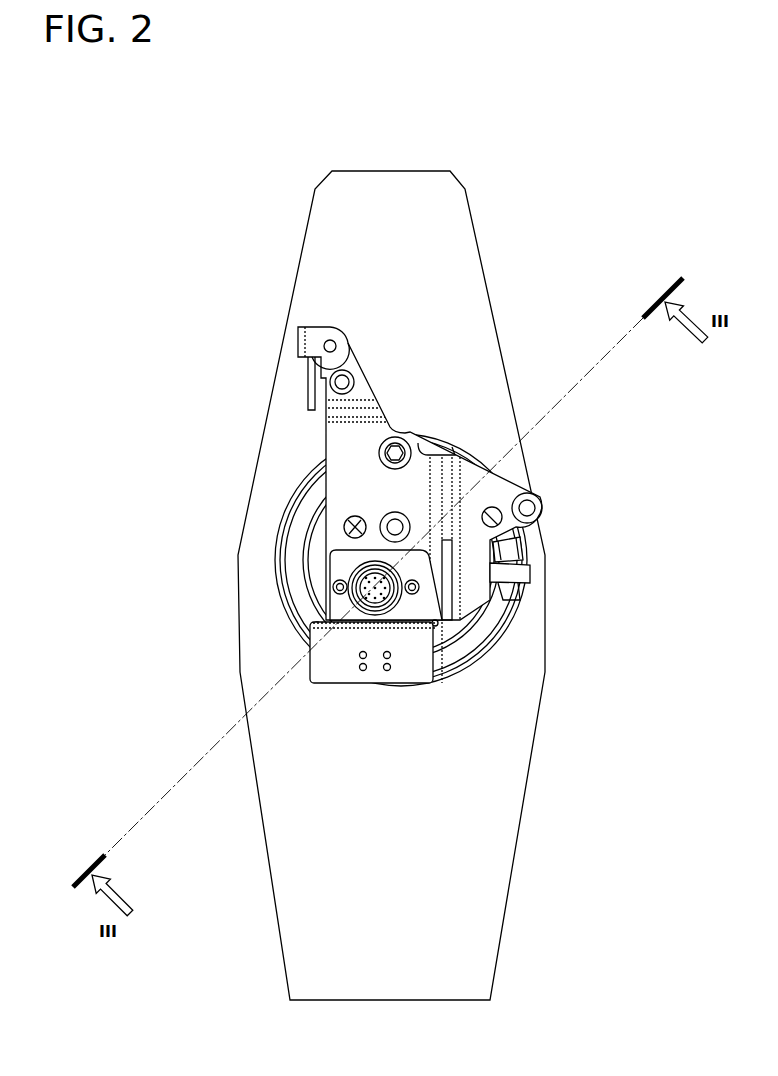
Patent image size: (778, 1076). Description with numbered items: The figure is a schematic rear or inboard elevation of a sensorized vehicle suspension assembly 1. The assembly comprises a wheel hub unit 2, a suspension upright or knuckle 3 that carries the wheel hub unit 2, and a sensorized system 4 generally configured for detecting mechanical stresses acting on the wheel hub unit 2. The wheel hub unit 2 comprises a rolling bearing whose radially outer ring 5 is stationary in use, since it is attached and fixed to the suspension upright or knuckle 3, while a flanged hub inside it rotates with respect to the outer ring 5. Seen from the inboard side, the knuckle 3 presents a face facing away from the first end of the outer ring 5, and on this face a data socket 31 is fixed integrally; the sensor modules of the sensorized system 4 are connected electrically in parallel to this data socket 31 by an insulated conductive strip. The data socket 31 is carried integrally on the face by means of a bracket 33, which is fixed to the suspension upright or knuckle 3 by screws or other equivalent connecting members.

The vehicle suspension assembly 1 is at (635, 128).
The wheel hub unit 2 is at (512, 594).
The suspension upright or knuckle 3 is at (478, 246).
The sensorized system 4 is at (330, 607).
The radially outer ring 5 is at (298, 522).
The data socket 31 is at (365, 570).
The bracket 33 is at (402, 662).